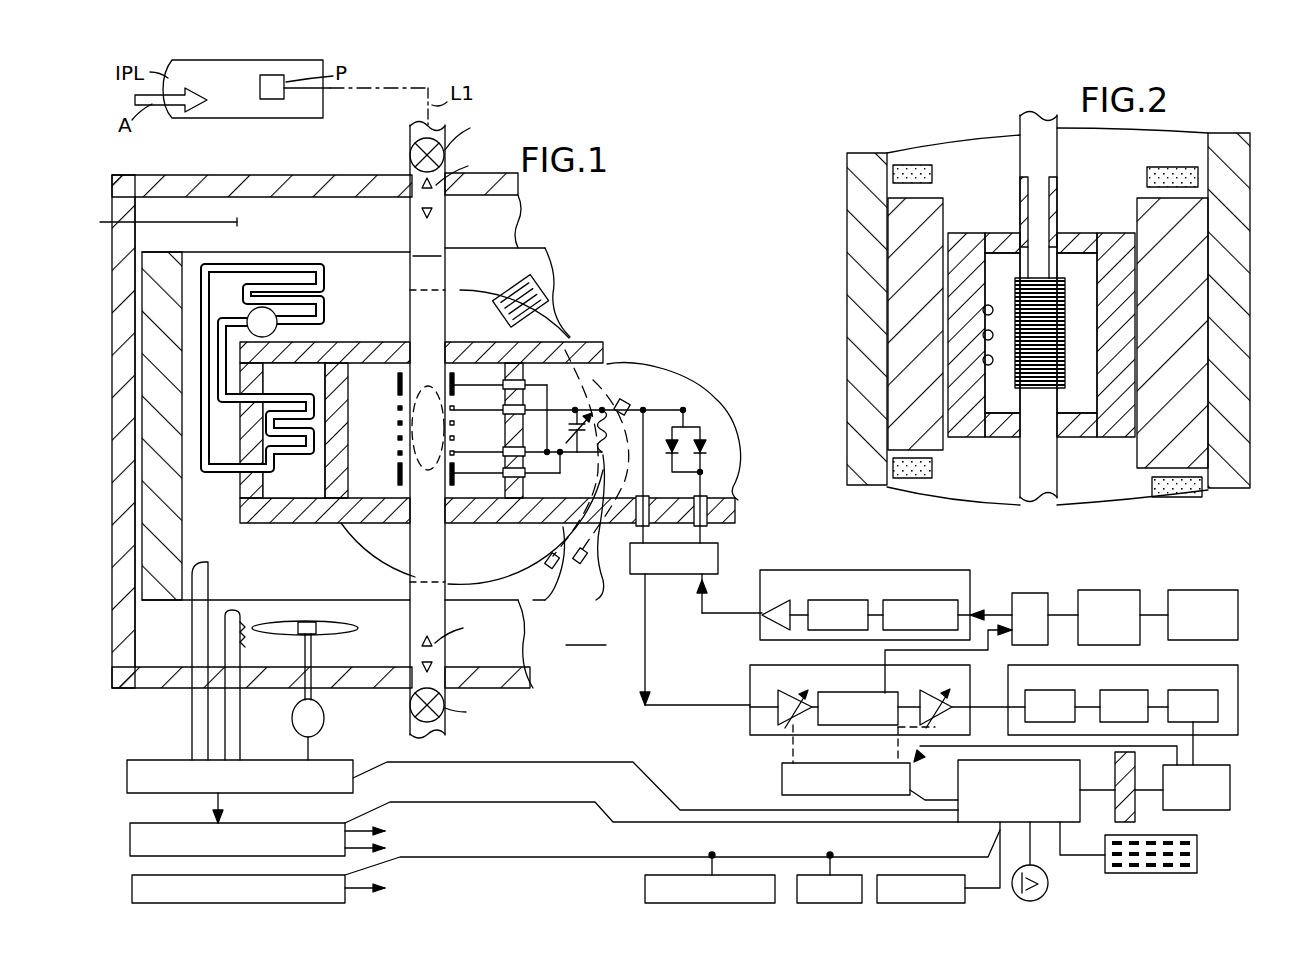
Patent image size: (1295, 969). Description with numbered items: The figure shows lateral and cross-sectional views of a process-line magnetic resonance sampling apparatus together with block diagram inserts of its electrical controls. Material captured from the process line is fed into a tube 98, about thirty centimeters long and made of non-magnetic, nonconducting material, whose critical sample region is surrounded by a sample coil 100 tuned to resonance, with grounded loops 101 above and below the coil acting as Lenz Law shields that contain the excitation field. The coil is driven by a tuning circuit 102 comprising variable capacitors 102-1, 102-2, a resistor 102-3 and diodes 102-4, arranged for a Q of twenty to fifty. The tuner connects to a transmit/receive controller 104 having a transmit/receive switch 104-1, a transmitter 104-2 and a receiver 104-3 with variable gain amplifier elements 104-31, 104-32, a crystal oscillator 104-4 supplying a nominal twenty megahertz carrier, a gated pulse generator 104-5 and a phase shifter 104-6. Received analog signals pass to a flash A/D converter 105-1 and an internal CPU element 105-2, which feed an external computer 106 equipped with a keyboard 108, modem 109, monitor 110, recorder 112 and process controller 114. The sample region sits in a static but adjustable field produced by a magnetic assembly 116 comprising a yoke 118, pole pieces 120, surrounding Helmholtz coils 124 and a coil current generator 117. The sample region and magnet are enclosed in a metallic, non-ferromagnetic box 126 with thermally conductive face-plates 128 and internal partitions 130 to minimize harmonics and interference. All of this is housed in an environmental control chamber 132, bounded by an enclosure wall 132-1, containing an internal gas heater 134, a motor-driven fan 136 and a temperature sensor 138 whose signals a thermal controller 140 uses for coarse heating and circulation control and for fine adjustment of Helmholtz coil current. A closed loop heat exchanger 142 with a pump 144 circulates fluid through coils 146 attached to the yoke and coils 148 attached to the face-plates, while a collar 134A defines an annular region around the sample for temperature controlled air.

In FIG. 1, the tube 98 is at (447, 212).
In FIG. 2, the tube 98 is at (1021, 142).
In FIG. 1, the sample coil 100 is at (397, 420).
In FIG. 2, the sample coil 100 is at (1070, 350).
In FIG. 1, the grounded loops 101 is at (397, 392).
In FIG. 2, the grounded loops 101 is at (1065, 250).
In FIG. 1, the tuning circuit 102 is at (604, 396).
In FIG. 1, the variable capacitor 102-1 is at (608, 362).
In FIG. 1, the variable capacitor 102-2 is at (632, 395).
In FIG. 1, the resistor 102-3 is at (570, 566).
In FIG. 1, the diodes 102-4 is at (690, 436).
In FIG. 1, the transmit/receive controller 104 is at (586, 633).
In FIG. 1, the transmit/receive switch 104-1 is at (718, 560).
In FIG. 1, the transmitter 104-2 is at (760, 618).
In FIG. 1, the receiver 104-3 is at (750, 695).
In FIG. 1, the variable gain amplifier element 104-31 is at (783, 723).
In FIG. 1, the variable gain amplifier element 104-32 is at (930, 692).
In FIG. 1, the crystal oscillator 104-4 is at (1209, 590).
In FIG. 1, the gated pulse generator 104-5 is at (1112, 578).
In FIG. 1, the phase shifter 104-6 is at (1030, 583).
In FIG. 1, the flash A/D converter 105-1 is at (1236, 690).
In FIG. 1, the CPU element 105-2 is at (1213, 771).
In FIG. 1, the external computer 106 is at (986, 826).
In FIG. 1, the keyboard 108 is at (1198, 858).
In FIG. 1, the modem 109 is at (895, 875).
In FIG. 1, the monitor 110 is at (1048, 884).
In FIG. 1, the recorder 112 is at (806, 875).
In FIG. 1, the process controller 114 is at (645, 888).
In FIG. 1, the magnetic assembly 116 is at (132, 878).
In FIG. 2, the magnetic assembly 116 is at (898, 117).
In FIG. 1, the coil current generator 117 is at (130, 825).
In FIG. 1, the yoke 118 is at (166, 268).
In FIG. 2, the yoke 118 is at (849, 222).
In FIG. 1, the pole pieces 120 is at (530, 335).
In FIG. 2, the pole pieces 120 is at (912, 275).
In FIG. 1, the Helmholtz coils 124 is at (540, 288).
In FIG. 2, the Helmholtz coils 124 is at (1147, 175).
In FIG. 1, the box 126 is at (338, 318).
In FIG. 1, the face-plates 128 is at (348, 355).
In FIG. 2, the face-plates 128 is at (978, 226).
In FIG. 1, the internal partitions 130 is at (312, 480).
In FIG. 1, the environmental control chamber 132 is at (286, 170).
In FIG. 1, the enclosure wall 132-1 is at (172, 221).
In FIG. 1, the internal gas heater 134 is at (245, 625).
In FIG. 1, the collar 134A is at (405, 545).
In FIG. 1, the fan 136 is at (308, 622).
In FIG. 1, the temperature sensor 138 is at (192, 568).
In FIG. 1, the thermal controller 140 is at (130, 762).
In FIG. 1, the closed loop heat exchanger 142 is at (247, 262).
In FIG. 1, the pump 144 is at (251, 311).
In FIG. 1, the coils 146 is at (305, 262).
In FIG. 1, the coils 148 is at (268, 478).
In FIG. 2, the coils 148 is at (993, 304).